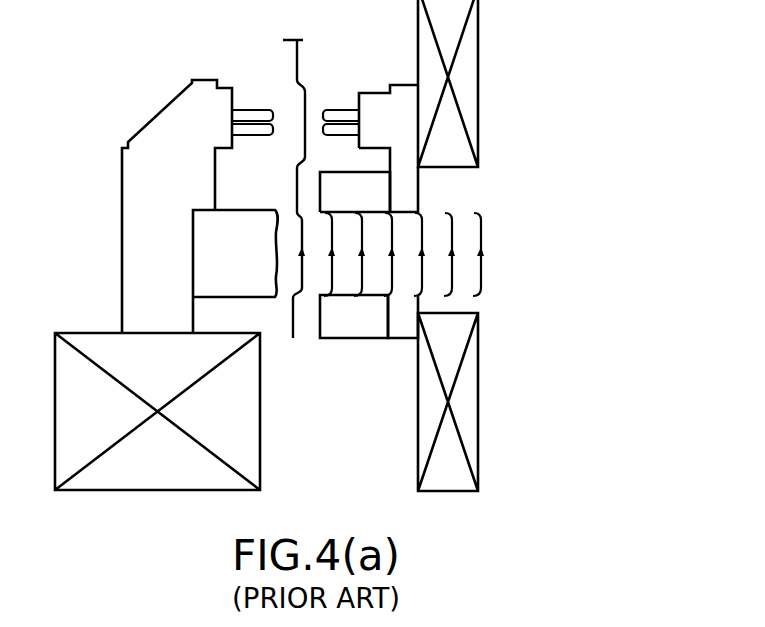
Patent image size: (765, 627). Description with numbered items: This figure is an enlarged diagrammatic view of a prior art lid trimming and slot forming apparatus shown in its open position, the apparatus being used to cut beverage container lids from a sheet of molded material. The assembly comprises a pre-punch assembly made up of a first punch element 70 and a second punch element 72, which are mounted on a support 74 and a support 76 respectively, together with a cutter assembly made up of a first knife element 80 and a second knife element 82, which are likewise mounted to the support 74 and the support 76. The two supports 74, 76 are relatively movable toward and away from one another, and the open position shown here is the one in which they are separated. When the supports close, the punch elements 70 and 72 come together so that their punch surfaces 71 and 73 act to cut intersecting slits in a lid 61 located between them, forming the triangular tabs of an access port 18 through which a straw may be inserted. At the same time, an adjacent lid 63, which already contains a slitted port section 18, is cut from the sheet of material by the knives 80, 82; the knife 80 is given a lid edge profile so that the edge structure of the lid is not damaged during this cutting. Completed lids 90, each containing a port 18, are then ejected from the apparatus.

The access port 18 is at (484, 242).
The lid 61 is at (305, 107).
The adjacent lid 63 is at (303, 240).
The first punch element 70 is at (251, 114).
The punch surface 71 is at (273, 127).
The second punch element 72 is at (333, 112).
The punch surface 73 is at (323, 134).
The support 74 is at (186, 191).
The support 76 is at (401, 118).
The first knife element 80 is at (252, 266).
The second knife element 82 is at (371, 204).
The completed lid 90 is at (536, 190).